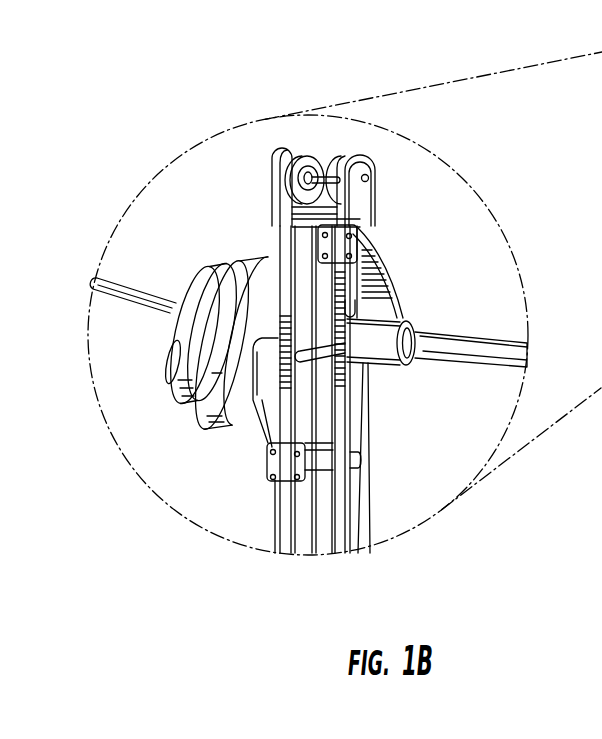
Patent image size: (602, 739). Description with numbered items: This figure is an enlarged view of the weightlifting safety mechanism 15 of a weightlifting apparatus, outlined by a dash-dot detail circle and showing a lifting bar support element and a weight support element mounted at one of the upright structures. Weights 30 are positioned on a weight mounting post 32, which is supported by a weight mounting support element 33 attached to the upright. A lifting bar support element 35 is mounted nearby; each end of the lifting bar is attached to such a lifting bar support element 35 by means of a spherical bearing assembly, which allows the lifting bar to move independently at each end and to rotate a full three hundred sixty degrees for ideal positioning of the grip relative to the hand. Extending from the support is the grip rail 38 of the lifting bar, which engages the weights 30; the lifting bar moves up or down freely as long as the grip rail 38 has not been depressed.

The weightlifting safety mechanism 15 is at (255, 100).
The weights 30 is at (213, 265).
The weight mounting post 32 is at (123, 290).
The weight mounting support element 33 is at (252, 401).
The lifting bar support element 35 is at (395, 277).
The grip rail 38 is at (483, 332).